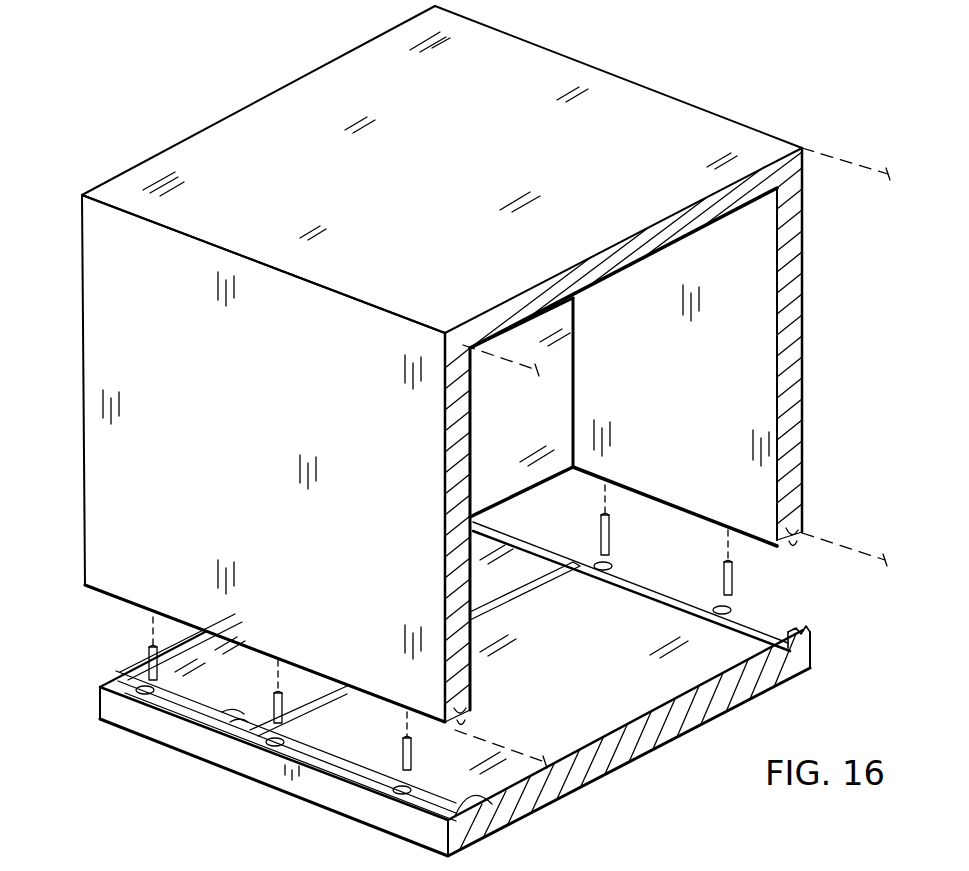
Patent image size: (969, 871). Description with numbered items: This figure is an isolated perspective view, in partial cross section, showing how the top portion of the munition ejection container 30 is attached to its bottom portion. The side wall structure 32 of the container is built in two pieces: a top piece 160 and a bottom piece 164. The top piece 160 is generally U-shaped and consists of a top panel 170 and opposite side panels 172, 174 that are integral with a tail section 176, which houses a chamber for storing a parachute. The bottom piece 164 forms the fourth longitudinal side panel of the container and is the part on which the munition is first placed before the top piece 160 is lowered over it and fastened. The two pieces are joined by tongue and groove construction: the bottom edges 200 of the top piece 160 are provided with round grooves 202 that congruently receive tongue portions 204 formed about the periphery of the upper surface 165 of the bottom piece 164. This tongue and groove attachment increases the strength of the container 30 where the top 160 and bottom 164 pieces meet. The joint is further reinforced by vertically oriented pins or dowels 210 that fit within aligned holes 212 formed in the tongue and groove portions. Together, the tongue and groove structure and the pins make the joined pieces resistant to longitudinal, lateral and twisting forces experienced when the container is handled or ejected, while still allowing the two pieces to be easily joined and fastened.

The container 30 is at (606, 12).
The side wall structure 32 is at (98, 299).
The top piece 160 is at (702, 126).
The bottom piece 164 is at (795, 678).
The upper surface 165 is at (700, 718).
The top panel 170 is at (653, 107).
The side panel 172 is at (762, 294).
The side panel 174 is at (95, 455).
The tail section 176 is at (92, 347).
The bottom edges 200 is at (794, 525).
The round grooves 202 is at (791, 544).
The tongue portions 204 is at (235, 660).
The pins or dowels 210 is at (610, 525).
The holes 212 is at (606, 567).